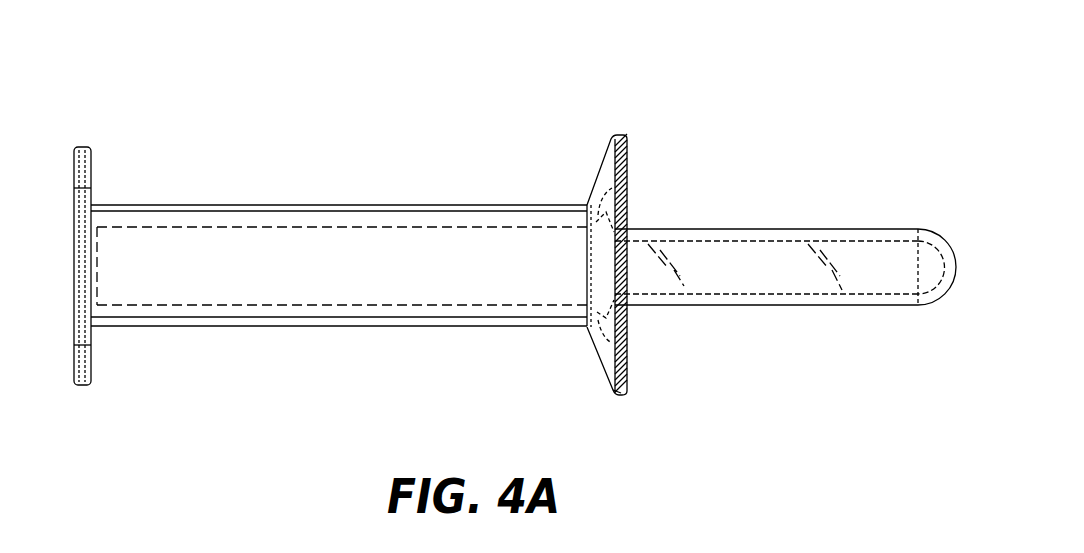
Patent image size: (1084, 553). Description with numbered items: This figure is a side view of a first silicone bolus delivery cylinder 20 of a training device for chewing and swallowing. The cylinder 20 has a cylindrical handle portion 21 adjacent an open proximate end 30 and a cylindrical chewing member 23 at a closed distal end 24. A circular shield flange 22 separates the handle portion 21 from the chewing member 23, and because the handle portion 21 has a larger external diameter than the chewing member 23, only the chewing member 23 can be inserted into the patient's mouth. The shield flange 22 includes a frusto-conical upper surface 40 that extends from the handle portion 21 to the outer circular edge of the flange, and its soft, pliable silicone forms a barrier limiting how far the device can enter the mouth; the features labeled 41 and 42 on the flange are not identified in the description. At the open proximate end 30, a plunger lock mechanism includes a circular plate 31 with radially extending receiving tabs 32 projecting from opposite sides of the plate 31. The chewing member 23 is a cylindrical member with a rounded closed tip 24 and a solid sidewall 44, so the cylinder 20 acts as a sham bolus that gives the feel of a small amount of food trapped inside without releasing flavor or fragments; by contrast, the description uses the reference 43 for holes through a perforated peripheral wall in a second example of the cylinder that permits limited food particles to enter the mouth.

The bolus delivery cylinder 20 is at (338, 100).
The cylindrical handle portion 21 is at (293, 328).
The circular shield flange 22 is at (630, 98).
The cylindrical chewing member 23 is at (784, 190).
The closed distal end 24 is at (945, 306).
The open proximate end 30 is at (58, 200).
The circular plate 31 is at (73, 308).
The receiving tabs 32 is at (85, 147).
The frusto-conical upper surface 40 is at (593, 347).
The flange lower end 41 is at (628, 395).
The flange lower recess 42 is at (630, 338).
The holes 43 is at (612, 200).
The solid sidewall 44 is at (810, 306).